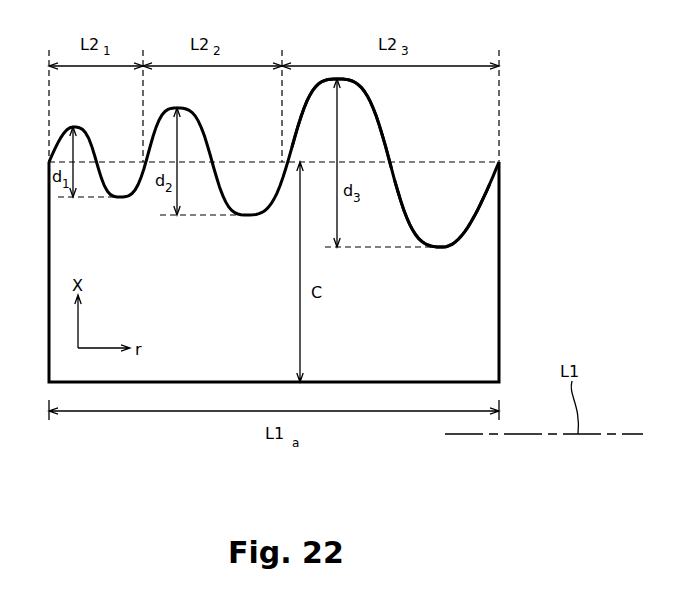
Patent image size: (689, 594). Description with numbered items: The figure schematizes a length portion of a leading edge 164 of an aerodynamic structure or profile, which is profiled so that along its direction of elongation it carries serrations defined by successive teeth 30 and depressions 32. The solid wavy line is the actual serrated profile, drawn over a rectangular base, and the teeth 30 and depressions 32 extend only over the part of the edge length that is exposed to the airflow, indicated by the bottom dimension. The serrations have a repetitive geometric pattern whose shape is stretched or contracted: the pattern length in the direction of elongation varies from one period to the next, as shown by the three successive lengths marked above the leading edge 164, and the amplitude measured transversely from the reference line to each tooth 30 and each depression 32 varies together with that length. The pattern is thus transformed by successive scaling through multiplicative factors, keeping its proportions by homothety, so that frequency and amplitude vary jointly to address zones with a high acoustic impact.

The teeth 30 is at (355, 107).
The depressions 32 is at (445, 217).
The leading edge 164 is at (385, 147).